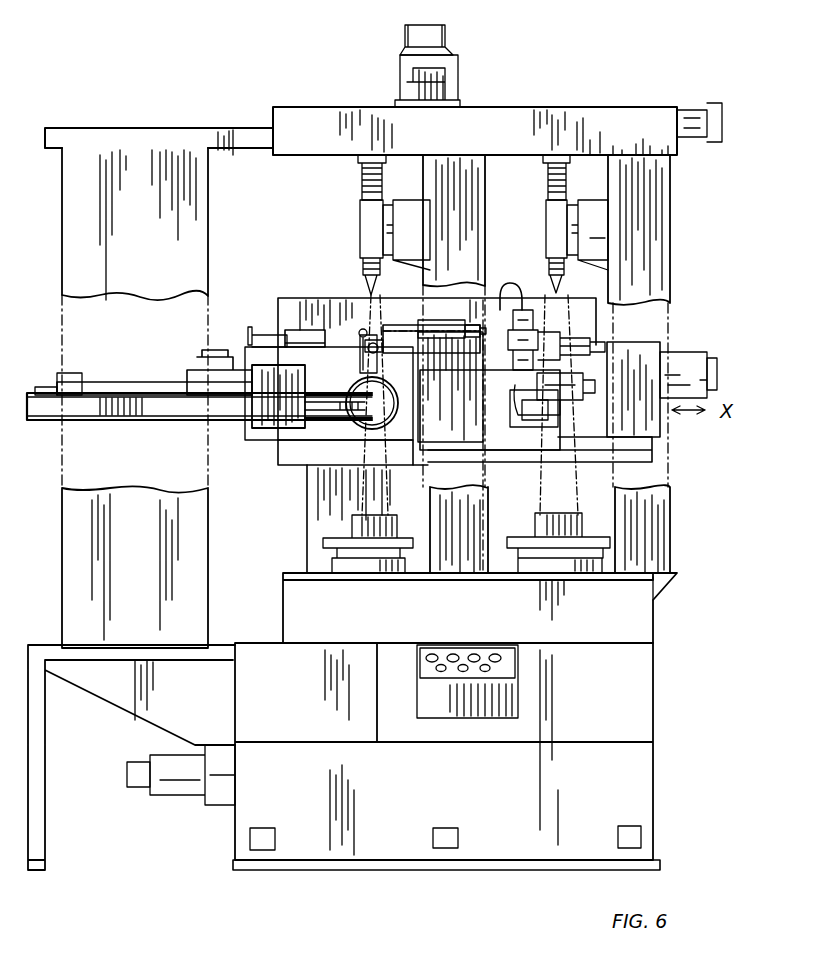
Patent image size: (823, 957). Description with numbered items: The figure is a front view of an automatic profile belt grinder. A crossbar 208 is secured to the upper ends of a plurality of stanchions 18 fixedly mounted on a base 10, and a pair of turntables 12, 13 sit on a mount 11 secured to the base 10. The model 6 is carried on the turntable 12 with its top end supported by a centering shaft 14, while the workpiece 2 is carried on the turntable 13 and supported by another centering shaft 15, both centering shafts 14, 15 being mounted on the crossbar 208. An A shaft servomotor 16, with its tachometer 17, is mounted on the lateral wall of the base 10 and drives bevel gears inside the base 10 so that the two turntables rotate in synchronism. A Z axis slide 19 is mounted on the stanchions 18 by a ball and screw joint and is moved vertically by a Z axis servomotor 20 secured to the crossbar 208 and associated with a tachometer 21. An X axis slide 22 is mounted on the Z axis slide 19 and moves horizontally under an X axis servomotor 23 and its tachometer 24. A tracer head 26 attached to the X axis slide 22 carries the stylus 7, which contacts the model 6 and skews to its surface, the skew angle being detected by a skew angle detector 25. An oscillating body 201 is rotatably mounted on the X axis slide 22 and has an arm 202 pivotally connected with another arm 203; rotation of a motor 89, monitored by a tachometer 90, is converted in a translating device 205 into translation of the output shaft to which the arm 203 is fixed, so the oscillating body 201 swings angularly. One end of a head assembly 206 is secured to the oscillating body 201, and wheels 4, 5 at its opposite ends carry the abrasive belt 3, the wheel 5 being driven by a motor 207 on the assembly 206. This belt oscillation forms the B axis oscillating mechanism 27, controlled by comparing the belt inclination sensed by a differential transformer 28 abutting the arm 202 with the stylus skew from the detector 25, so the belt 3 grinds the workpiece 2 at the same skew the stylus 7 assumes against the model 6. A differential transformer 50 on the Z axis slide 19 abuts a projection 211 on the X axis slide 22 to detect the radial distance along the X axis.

The workpiece 2 is at (385, 468).
The abrasive belt 3 is at (183, 422).
The contact wheel 4 is at (378, 403).
The wheel 5 is at (45, 387).
The model 6 is at (578, 498).
The stylus 7 is at (550, 422).
The base 10 is at (650, 780).
The mount 11 is at (650, 615).
The turntable 12 is at (525, 538).
The turntable 13 is at (337, 538).
The centering shaft 14 is at (548, 218).
The centering shaft 15 is at (362, 220).
The A shaft servomotor 16 is at (182, 790).
The tachometer 17 is at (137, 762).
The stanchions 18 is at (480, 200).
The Z axis slide 19 is at (283, 298).
The Z axis servomotor 20 is at (460, 78).
The tachometer 21 is at (450, 42).
The X axis slide 22 is at (463, 442).
The X axis servomotor 23 is at (680, 352).
The tachometer 24 is at (713, 360).
The skew angle detector 25 is at (513, 412).
The tracer head 26 is at (530, 310).
The B axis oscillating mechanism 27 is at (272, 430).
The differential transformer 28 is at (440, 360).
The differential transformer 50 is at (297, 333).
The motor 89 is at (430, 323).
The tachometer 90 is at (475, 325).
The oscillating body 201 is at (398, 406).
The arm 202 is at (363, 352).
The arm 203 is at (368, 330).
The translating device 205 is at (392, 325).
The head assembly 206 is at (135, 422).
The motor 207 is at (196, 365).
The crossbar 208 is at (550, 107).
The projection 211 is at (250, 328).